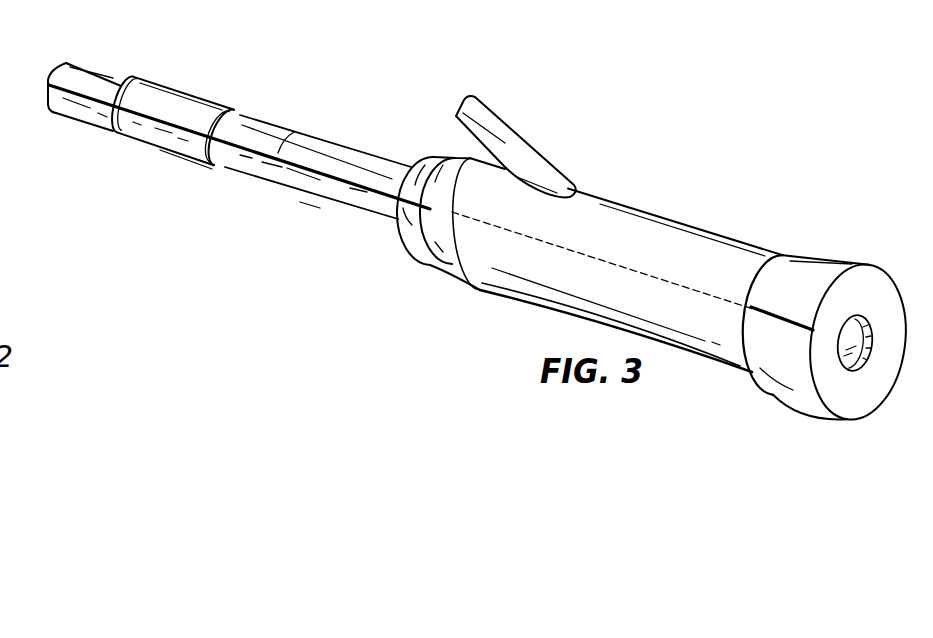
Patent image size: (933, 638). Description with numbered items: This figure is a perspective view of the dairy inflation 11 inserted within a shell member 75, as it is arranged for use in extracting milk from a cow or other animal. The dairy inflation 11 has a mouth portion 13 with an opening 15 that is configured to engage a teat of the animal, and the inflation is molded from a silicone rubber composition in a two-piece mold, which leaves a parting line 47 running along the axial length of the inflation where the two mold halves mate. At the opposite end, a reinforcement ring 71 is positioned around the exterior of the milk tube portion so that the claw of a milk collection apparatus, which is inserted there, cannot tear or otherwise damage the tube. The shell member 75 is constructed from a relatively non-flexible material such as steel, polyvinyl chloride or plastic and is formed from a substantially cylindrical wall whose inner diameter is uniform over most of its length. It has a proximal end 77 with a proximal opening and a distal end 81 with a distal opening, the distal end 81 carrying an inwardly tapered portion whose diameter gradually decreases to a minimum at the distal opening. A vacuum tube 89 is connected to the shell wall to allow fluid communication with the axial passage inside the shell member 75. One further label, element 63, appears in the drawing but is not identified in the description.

The dairy inflation 11 is at (360, 156).
The mouth portion 13 is at (818, 254).
The opening 15 is at (864, 356).
The parting line 47 is at (293, 132).
The distal portion 63 is at (0, 222).
The reinforcement ring 71 is at (190, 90).
The shell member 75 is at (652, 212).
The proximal end 77 is at (733, 370).
The distal end 81 is at (472, 287).
The vacuum tube 89 is at (510, 124).